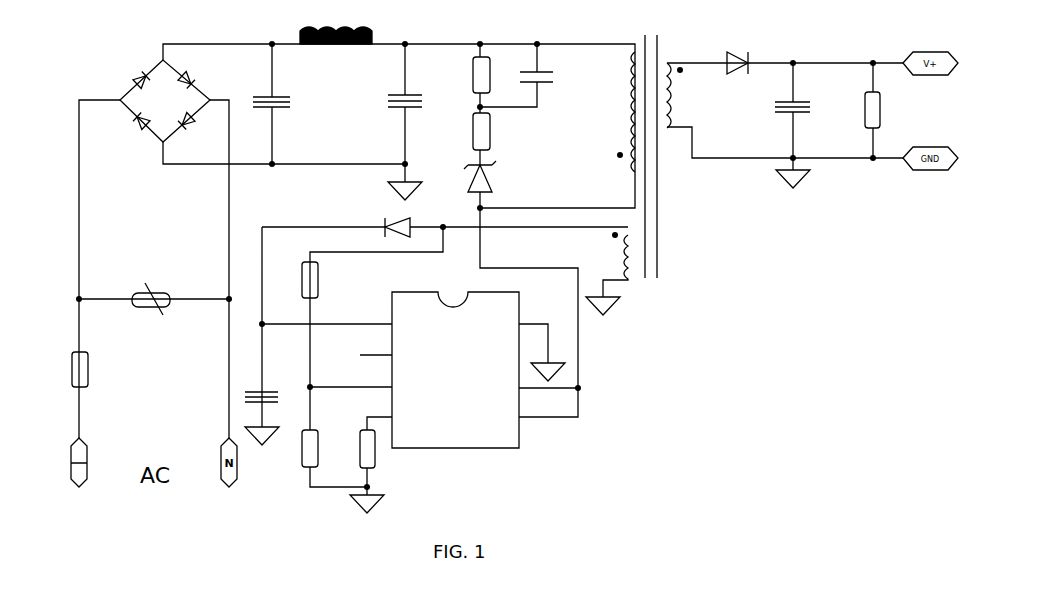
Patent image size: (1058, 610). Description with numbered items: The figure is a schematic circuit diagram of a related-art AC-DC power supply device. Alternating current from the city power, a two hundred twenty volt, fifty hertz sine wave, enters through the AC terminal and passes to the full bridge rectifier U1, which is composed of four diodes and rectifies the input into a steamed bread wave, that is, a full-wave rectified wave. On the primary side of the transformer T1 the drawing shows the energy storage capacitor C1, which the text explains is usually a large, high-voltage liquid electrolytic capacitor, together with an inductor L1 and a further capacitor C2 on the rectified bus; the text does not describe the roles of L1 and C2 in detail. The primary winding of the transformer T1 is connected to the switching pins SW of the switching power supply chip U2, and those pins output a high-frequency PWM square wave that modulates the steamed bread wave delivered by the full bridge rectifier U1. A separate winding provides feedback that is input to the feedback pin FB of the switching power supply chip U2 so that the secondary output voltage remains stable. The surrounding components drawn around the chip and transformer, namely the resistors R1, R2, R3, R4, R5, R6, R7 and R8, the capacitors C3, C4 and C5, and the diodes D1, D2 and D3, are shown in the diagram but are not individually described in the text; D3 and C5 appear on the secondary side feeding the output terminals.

The full bridge rectifier U1 is at (160, 99).
The inductor L1 is at (336, 27).
The capacitor C1 is at (282, 104).
The capacitor C2 is at (388, 104).
The capacitor C3 is at (528, 75).
The capacitor C4 is at (267, 409).
The output capacitor C5 is at (803, 125).
The resistor R1 is at (66, 369).
The thermistor R2 is at (151, 294).
The resistor R3 is at (465, 78).
The resistor R4 is at (465, 139).
The resistor R5 is at (320, 280).
The resistor R6 is at (295, 448).
The current sense resistor R7 is at (381, 451).
The load resistor R8 is at (885, 110).
The zener diode D1 is at (492, 184).
The diode D2 is at (383, 221).
The output rectifier diode D3 is at (738, 79).
The switching power supply chip U2 is at (455, 382).
The transformer T1 is at (634, 175).